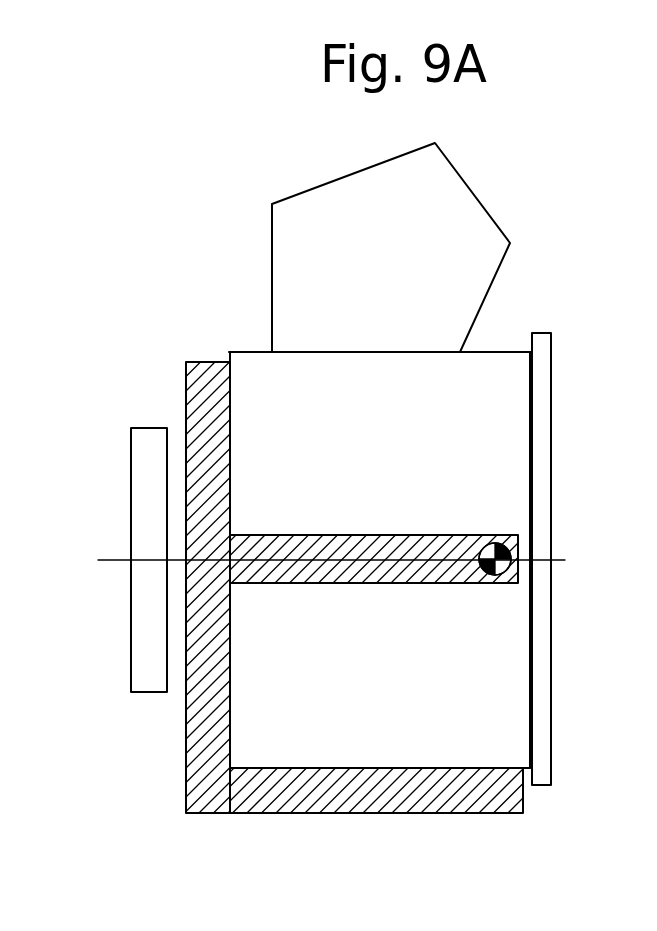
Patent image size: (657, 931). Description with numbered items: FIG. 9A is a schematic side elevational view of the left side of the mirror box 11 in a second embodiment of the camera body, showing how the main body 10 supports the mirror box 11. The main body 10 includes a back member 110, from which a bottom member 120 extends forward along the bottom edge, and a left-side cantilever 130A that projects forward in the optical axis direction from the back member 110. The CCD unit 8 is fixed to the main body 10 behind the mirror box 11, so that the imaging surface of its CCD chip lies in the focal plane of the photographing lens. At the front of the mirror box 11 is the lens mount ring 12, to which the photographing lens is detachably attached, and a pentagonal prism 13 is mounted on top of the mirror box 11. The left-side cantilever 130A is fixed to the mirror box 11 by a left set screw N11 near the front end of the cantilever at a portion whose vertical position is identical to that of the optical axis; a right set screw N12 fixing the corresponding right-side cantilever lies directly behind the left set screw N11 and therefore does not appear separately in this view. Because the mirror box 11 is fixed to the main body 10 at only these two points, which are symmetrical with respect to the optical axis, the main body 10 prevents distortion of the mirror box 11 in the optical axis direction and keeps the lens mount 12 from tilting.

The CCD unit 8 is at (142, 642).
The main body 10 is at (321, 586).
The mirror box 11 is at (422, 738).
The lens mount ring 12 is at (543, 452).
The pentagonal prism 13 is at (477, 232).
The back member 110 is at (193, 397).
The bottom member 120 is at (335, 795).
The left-side cantilever 130A is at (345, 547).
The left set screw N11 is at (520, 545).
The right set screw N12 is at (560, 563).